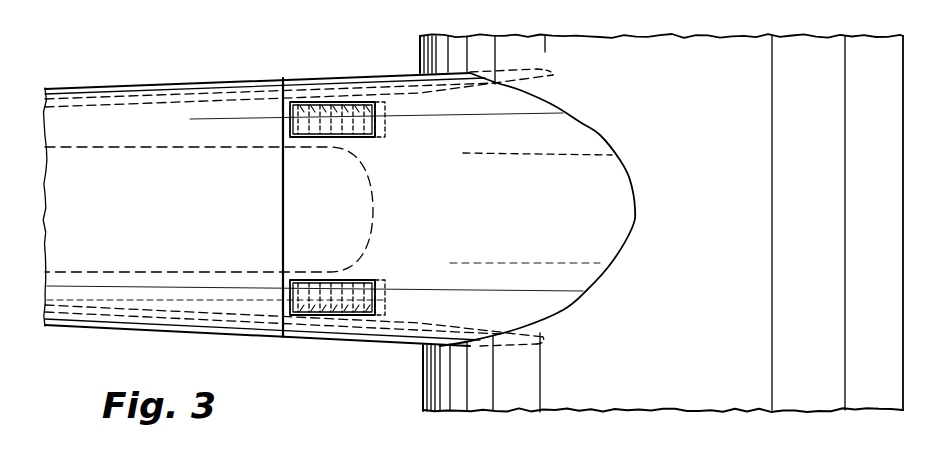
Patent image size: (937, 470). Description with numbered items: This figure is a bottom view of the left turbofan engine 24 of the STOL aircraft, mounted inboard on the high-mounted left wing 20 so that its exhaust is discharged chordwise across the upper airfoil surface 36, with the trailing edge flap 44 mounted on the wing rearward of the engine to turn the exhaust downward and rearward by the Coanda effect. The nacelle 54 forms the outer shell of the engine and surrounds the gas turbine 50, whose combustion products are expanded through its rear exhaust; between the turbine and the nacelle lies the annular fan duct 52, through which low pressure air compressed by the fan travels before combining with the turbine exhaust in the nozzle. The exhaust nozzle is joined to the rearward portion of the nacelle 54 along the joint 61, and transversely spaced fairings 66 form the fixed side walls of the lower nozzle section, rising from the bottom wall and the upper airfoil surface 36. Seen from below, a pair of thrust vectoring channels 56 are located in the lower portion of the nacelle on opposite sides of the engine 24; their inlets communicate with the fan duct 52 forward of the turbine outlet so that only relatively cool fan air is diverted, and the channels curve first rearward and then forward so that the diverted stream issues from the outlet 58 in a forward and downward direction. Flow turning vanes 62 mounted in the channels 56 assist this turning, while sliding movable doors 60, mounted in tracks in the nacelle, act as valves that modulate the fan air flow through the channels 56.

The left wing 20 is at (723, 250).
The left turbofan engine 24 is at (97, 74).
The upper airfoil surface 36 is at (700, 385).
The trailing edge flap 44 is at (866, 396).
The gas turbine 50 is at (232, 222).
The annular fan duct 52 is at (173, 120).
The nacelle 54 is at (133, 89).
The thrust vectoring channels 56 is at (359, 214).
The outlet 58 is at (348, 106).
The movable doors 60 is at (313, 106).
The joint 61 is at (285, 205).
The flow turning vanes 62 is at (302, 104).
The fairings 66 is at (540, 70).